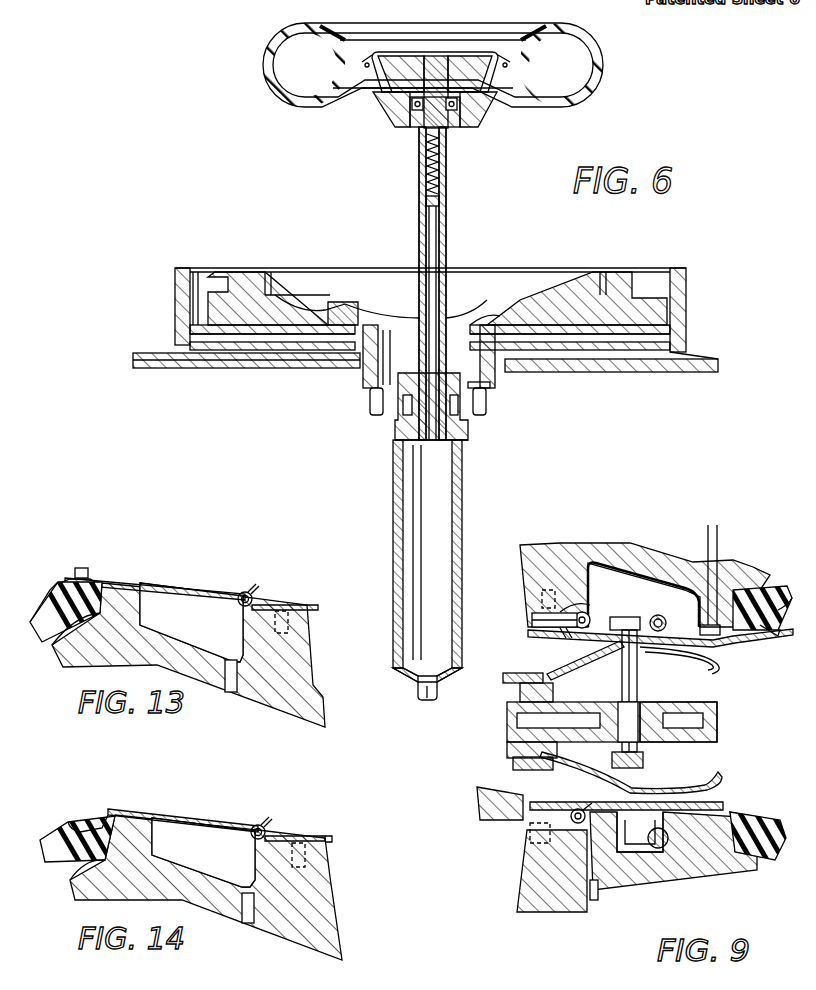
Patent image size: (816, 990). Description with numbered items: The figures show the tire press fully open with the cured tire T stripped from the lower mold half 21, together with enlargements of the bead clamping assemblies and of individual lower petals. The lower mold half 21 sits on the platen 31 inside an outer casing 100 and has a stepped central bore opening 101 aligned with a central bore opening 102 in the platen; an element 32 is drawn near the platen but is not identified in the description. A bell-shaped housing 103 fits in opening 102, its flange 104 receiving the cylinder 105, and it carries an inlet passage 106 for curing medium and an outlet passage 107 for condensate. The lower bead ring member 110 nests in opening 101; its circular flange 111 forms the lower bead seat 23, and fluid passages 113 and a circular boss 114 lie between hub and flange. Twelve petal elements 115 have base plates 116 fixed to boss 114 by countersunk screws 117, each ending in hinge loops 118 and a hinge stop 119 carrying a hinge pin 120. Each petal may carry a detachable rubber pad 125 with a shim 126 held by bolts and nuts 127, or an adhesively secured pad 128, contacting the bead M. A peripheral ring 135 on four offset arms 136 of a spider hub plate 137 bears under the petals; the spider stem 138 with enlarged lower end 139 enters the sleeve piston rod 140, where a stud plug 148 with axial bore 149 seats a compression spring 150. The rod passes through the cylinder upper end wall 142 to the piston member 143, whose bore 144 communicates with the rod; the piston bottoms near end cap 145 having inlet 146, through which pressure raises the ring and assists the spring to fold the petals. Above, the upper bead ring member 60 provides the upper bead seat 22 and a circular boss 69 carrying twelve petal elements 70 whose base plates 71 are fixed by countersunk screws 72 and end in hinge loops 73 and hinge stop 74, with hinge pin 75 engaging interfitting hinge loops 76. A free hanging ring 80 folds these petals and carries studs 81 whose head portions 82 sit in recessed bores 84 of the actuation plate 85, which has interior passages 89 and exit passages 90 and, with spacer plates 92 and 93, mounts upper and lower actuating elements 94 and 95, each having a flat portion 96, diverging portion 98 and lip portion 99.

In FIG. 6, the cured tire T is at (604, 66).
In FIG. 6, the spider stem 138 is at (486, 76).
In FIG. 6, the spider hub plate 137 is at (395, 68).
In FIG. 9, the spider hub plate 137 is at (483, 803).
In FIG. 6, the circular flange 111 is at (520, 90).
In FIG. 13, the circular flange 111 is at (132, 613).
In FIG. 14, the circular flange 111 is at (152, 848).
In FIG. 6, the fluid passages 113 is at (398, 104).
In FIG. 13, the fluid passages 113 is at (228, 692).
In FIG. 14, the fluid passages 113 is at (247, 923).
In FIG. 9, the fluid passages 113 is at (598, 900).
In FIG. 6, the bead ring member 110 is at (470, 104).
In FIG. 9, the bead ring member 110 is at (677, 877).
In FIG. 6, the circular boss 114 is at (410, 120).
In FIG. 13, the circular boss 114 is at (302, 657).
In FIG. 14, the circular boss 114 is at (318, 887).
In FIG. 9, the circular boss 114 is at (527, 880).
In FIG. 6, the enlarged diameter lower end 139 is at (446, 130).
In FIG. 6, the coiled compression spring 150 is at (440, 172).
In FIG. 6, the stud plug 148 is at (441, 203).
In FIG. 6, the small diameter axial bore 149 is at (429, 214).
In FIG. 6, the sleeve piston rod 140 is at (447, 222).
In FIG. 6, the lower mold half 21 is at (626, 266).
In FIG. 6, the outer casing 100 is at (686, 318).
In FIG. 6, the stepped central bore opening 101 is at (350, 304).
In FIG. 6, the central bore opening 102 is at (488, 320).
In FIG. 6, the platen 31 is at (622, 367).
In FIG. 6, the plate step 32 is at (672, 370).
In FIG. 6, the cylinder upper end wall 142 is at (447, 374).
In FIG. 6, the inlet passage 106 is at (372, 370).
In FIG. 6, the flange 104 is at (396, 420).
In FIG. 6, the outlet passage 107 is at (492, 380).
In FIG. 6, the bell-shaped housing 103 is at (490, 392).
In FIG. 6, the cylinder piston member 143 is at (464, 438).
In FIG. 6, the small diameter axial bore 144 is at (427, 442).
In FIG. 6, the cylinder 105 is at (462, 480).
In FIG. 6, the lower end cap 145 is at (405, 672).
In FIG. 6, the inlet 146 is at (419, 690).
In FIG. 13, the bead petal elements 115 is at (208, 578).
In FIG. 14, the bead petal elements 115 is at (210, 806).
In FIG. 9, the bead petal elements 115 is at (540, 806).
In FIG. 13, the hinge pin 120 is at (241, 603).
In FIG. 14, the hinge pin 120 is at (265, 831).
In FIG. 13, the hinge loops 118 is at (253, 598).
In FIG. 14, the hinge loops 118 is at (255, 838).
In FIG. 13, the hinge stop 119 is at (250, 590).
In FIG. 14, the hinge stop 119 is at (265, 826).
In FIG. 9, the hinge stop 119 is at (570, 824).
In FIG. 13, the base plates 116 is at (298, 606).
In FIG. 14, the base plates 116 is at (318, 838).
In FIG. 9, the base plates 116 is at (530, 830).
In FIG. 13, the countersunk screws 117 is at (292, 619).
In FIG. 14, the countersunk screws 117 is at (308, 853).
In FIG. 13, the lower bead seat 23 is at (103, 590).
In FIG. 14, the lower bead seat 23 is at (108, 815).
In FIG. 9, the lower bead seat 23 is at (763, 860).
In FIG. 13, the tire band beads M is at (88, 615).
In FIG. 14, the tire band beads M is at (88, 857).
In FIG. 9, the tire band beads M is at (778, 608).
In FIG. 13, the resilient rubber pad 125 is at (55, 590).
In FIG. 13, the shim 126 is at (88, 577).
In FIG. 13, the bolts and nuts 127 is at (82, 567).
In FIG. 14, the rubber pad 128 is at (68, 822).
In FIG. 9, the bead ring member 60 is at (662, 565).
In FIG. 9, the upper bead seat 22 is at (757, 598).
In FIG. 9, the countersunk screws 72 is at (542, 597).
In FIG. 9, the hinge loops 73 is at (577, 600).
In FIG. 9, the circular boss 69 is at (587, 609).
In FIG. 9, the base plates 71 is at (567, 621).
In FIG. 9, the hinge stop 74 is at (570, 630).
In FIG. 9, the hinge pin 75 is at (612, 630).
In FIG. 9, the interfitting hinge loops 76 is at (632, 620).
In FIG. 9, the depending studs 81 is at (637, 683).
In FIG. 9, the free hanging ring 80 is at (664, 630).
In FIG. 9, the upper actuating petal elements 94 is at (715, 645).
In FIG. 9, the curved lip portion 99 is at (718, 668).
In FIG. 9, the upper bead clamping petal element 70 is at (763, 634).
In FIG. 9, the resilient radially diverging portion 98 is at (567, 673).
In FIG. 9, the annular flat portion 96 is at (527, 677).
In FIG. 9, the circular plate 92 is at (523, 692).
In FIG. 9, the circular actuation plate 85 is at (508, 718).
In FIG. 9, the interior passages 89 is at (520, 730).
In FIG. 9, the exit passages 90 is at (717, 738).
In FIG. 9, the recessed bore 84 is at (647, 738).
In FIG. 9, the head portion 82 is at (643, 765).
In FIG. 9, the circular plate 93 is at (510, 752).
In FIG. 9, the lower actuating petal elements 95 is at (707, 786).
In FIG. 9, the offset arms 136 is at (618, 835).
In FIG. 9, the peripheral ring 135 is at (670, 850).